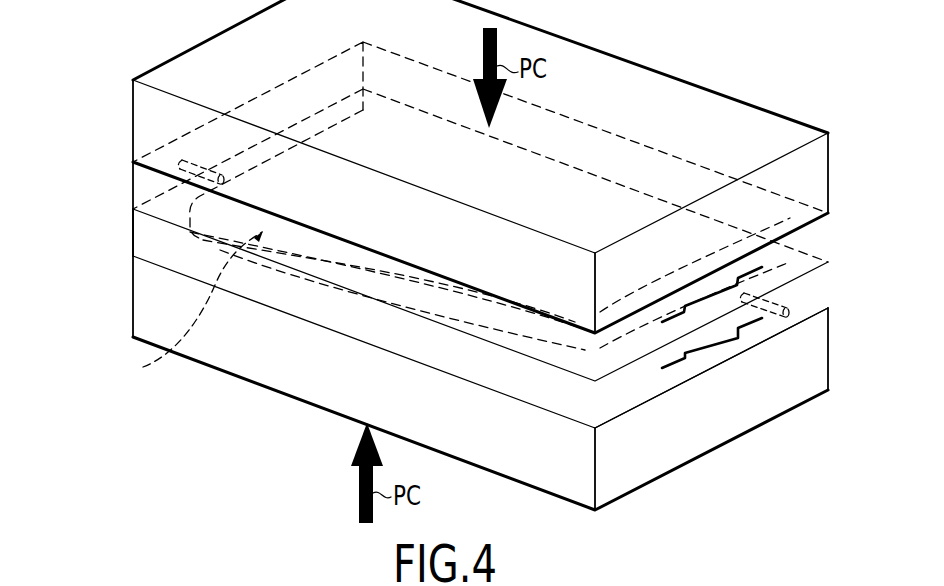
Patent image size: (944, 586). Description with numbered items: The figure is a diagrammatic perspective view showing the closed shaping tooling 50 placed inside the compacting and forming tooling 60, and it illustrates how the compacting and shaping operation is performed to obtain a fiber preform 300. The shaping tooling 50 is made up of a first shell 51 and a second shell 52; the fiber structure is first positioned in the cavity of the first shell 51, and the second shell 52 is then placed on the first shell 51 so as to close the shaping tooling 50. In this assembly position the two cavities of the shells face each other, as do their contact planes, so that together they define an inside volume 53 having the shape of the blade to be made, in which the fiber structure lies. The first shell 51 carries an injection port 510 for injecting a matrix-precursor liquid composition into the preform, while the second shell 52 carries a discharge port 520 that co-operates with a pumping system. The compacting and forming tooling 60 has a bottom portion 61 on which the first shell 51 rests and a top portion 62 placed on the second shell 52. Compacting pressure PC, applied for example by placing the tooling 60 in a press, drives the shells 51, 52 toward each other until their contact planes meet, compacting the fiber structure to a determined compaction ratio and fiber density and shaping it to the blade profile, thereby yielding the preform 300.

The preform 300 is at (568, 195).
The shaping tooling 50 is at (68, 155).
The second shell 52 is at (130, 183).
The first shell 51 is at (130, 234).
The discharge port 520 is at (190, 163).
The injection port 510 is at (772, 307).
The inside volume 53 is at (190, 310).
The compacting and forming tooling 60 is at (820, 470).
The bottom portion 61 is at (644, 449).
The top portion 62 is at (797, 217).